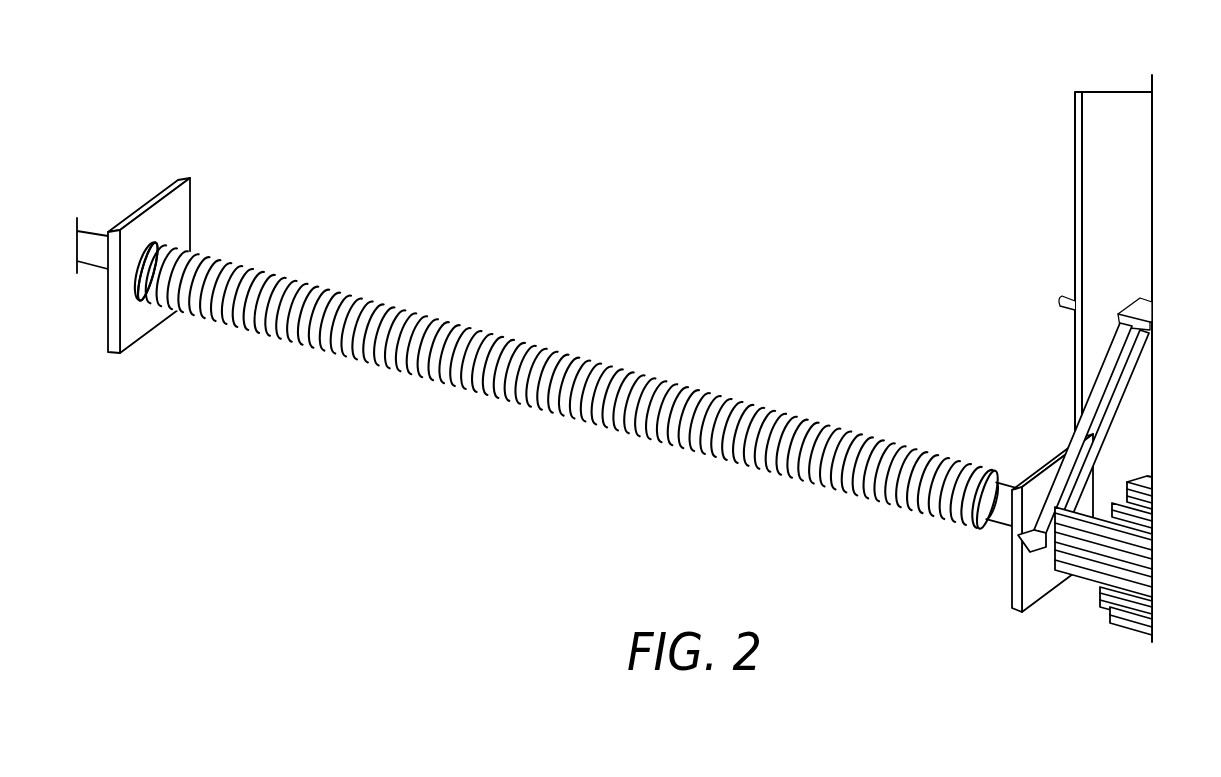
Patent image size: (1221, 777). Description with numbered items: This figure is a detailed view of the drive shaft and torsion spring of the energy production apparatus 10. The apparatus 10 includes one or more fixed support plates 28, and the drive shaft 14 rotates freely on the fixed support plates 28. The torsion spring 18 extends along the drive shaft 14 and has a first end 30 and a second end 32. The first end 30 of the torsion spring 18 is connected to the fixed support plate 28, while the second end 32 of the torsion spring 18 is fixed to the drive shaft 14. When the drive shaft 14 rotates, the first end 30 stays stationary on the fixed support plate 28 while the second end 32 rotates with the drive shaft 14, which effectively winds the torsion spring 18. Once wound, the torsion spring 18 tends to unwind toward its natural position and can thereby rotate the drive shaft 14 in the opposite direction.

The energy production apparatus 10 is at (289, 498).
The drive shaft 14 is at (88, 231).
The torsion spring 18 is at (366, 297).
The fixed support plate 28 is at (1046, 466).
The first end 30 is at (142, 265).
The second end 32 is at (980, 503).